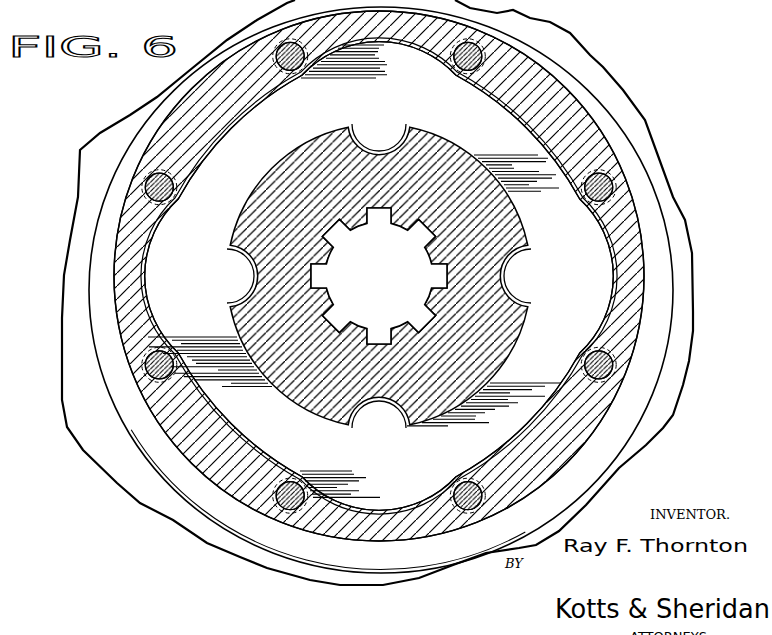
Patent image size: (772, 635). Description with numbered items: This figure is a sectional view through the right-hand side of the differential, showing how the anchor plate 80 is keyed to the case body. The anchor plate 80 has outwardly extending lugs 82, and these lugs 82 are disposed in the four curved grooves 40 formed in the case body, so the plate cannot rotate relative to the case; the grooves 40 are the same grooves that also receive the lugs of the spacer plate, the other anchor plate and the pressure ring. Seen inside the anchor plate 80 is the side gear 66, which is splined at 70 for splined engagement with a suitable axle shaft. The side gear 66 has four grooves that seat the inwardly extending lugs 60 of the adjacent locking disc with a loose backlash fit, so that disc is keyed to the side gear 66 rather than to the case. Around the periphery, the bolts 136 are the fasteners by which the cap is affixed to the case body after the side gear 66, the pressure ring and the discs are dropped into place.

The curved grooves 40 is at (609, 293).
The inwardly extending lugs 60 is at (385, 130).
The side gear 66 is at (283, 195).
The spline 70 is at (438, 275).
The anchor plate 80 is at (490, 142).
The outwardly extending lugs 82 is at (593, 268).
The bolts 136 is at (150, 177).